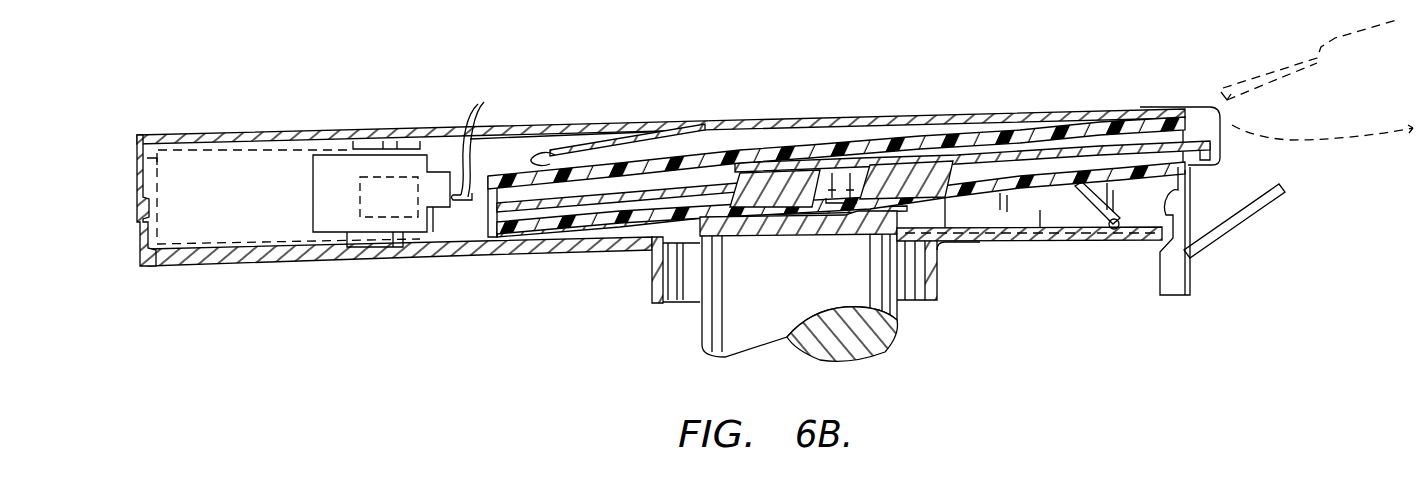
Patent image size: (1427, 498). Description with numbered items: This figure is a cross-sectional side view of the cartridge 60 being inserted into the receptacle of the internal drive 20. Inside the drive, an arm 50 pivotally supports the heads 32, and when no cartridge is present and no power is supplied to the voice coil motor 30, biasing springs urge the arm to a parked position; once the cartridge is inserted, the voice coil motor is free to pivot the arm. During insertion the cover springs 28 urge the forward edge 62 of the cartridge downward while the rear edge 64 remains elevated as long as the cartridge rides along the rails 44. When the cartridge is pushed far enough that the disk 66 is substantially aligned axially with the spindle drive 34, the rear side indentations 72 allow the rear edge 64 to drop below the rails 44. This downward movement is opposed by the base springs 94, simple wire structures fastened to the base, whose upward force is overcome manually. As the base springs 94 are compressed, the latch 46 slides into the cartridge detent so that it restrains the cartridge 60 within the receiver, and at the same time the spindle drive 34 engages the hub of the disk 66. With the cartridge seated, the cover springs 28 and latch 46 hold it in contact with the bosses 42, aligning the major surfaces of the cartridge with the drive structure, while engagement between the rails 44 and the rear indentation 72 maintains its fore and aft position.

The internal drive 20 is at (400, 104).
The cover springs 28 is at (593, 148).
The voice coil motor 30 is at (137, 159).
The heads 32 is at (484, 144).
The spindle drive 34 is at (852, 229).
The bosses 42 is at (617, 221).
The rails 44 is at (1040, 211).
The latch 46 is at (1180, 208).
The arm 50 is at (442, 240).
The cartridge 60 is at (850, 142).
The forward edge 62 is at (490, 226).
The rear edge 64 is at (1226, 128).
The disk 66 is at (1093, 145).
The rear side indentations 72 is at (982, 164).
The base springs 94 is at (1093, 212).